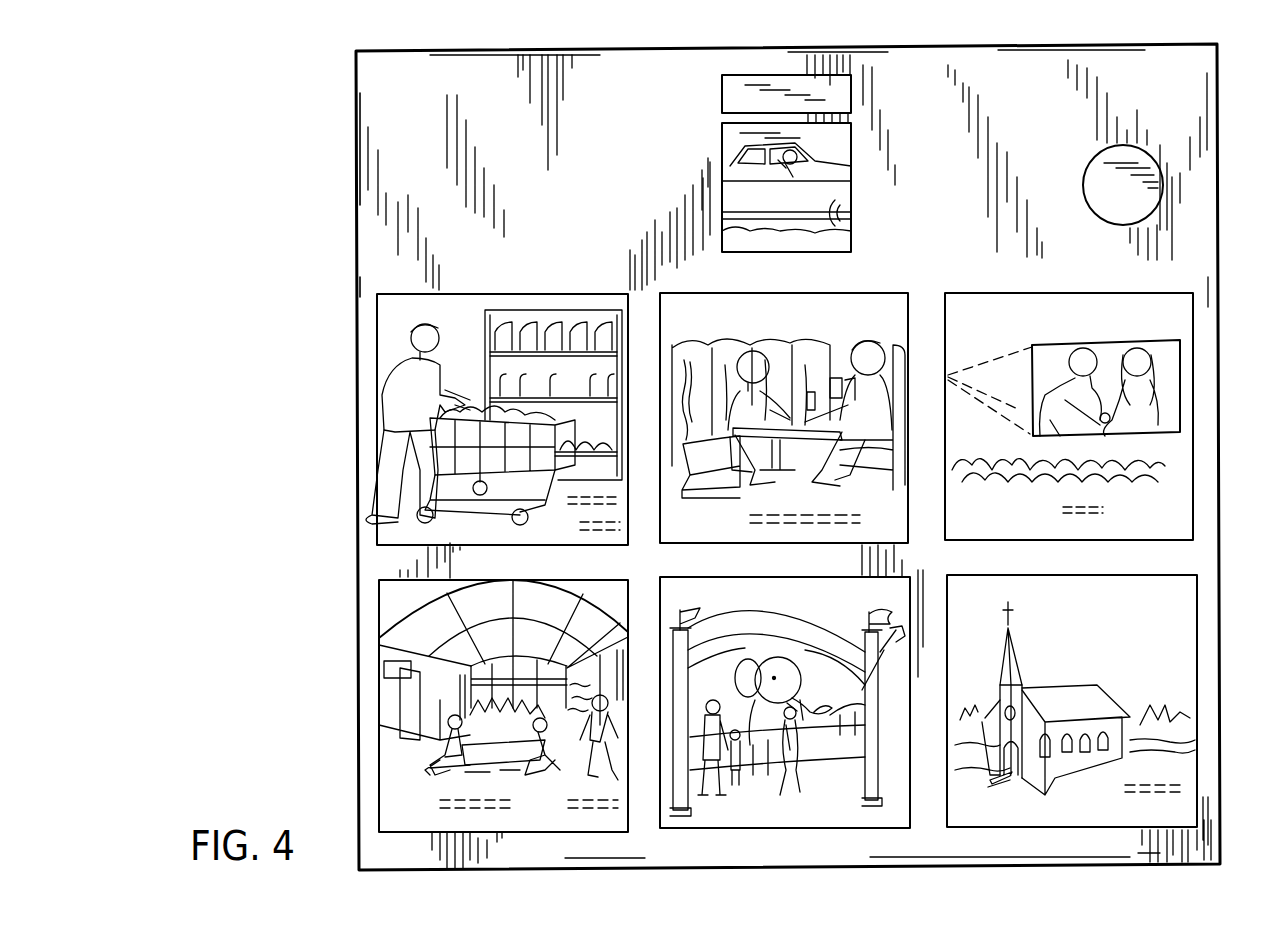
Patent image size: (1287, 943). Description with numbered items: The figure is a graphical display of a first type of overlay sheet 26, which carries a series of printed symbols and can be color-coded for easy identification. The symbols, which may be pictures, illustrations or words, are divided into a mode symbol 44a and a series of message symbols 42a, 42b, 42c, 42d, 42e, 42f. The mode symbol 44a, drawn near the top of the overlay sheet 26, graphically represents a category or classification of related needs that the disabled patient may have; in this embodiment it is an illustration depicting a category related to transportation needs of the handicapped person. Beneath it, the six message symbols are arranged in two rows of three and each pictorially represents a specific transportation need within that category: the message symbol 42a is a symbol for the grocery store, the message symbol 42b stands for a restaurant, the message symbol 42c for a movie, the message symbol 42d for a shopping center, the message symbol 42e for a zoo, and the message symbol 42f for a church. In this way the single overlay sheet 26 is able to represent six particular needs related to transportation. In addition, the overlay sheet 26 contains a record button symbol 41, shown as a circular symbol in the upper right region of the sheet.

The overlay sheet 26 is at (1192, 244).
The record button symbol 41 is at (1143, 172).
The mode symbol 44a is at (730, 136).
The message symbol 42a is at (390, 530).
The message symbol 42b is at (876, 310).
The message symbol 42c is at (1178, 512).
The message symbol 42d is at (392, 770).
The message symbol 42e is at (760, 812).
The message symbol 42f is at (1177, 634).